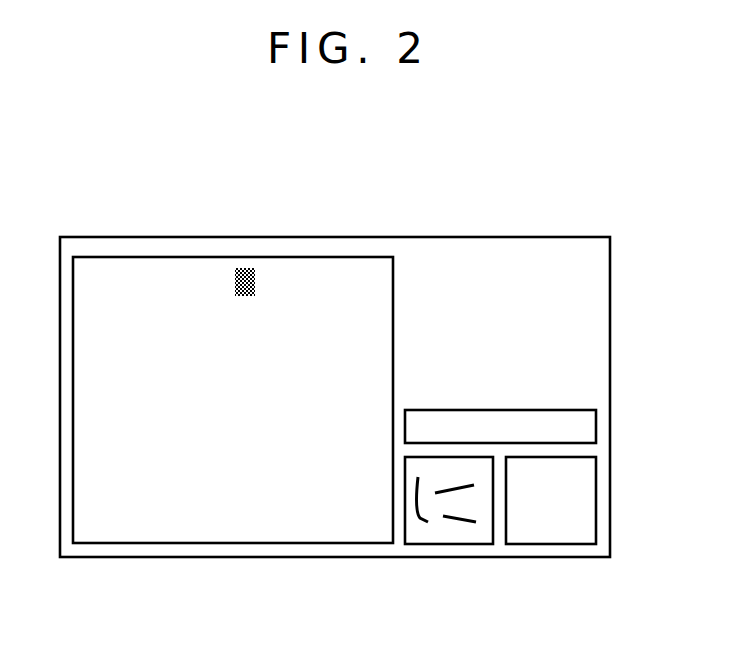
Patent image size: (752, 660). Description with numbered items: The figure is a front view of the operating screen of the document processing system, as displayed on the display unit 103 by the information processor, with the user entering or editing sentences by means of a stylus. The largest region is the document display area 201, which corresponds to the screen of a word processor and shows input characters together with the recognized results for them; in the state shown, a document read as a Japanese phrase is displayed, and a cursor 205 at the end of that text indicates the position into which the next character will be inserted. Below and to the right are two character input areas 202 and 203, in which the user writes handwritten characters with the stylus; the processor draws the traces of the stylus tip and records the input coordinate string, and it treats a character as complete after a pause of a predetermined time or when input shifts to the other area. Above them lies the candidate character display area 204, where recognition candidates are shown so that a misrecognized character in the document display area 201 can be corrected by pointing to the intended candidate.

The display unit 103 is at (553, 236).
The document display area 201 is at (95, 253).
The character input area 202 is at (458, 543).
The character input area 203 is at (560, 543).
The candidate character display area 204 is at (597, 425).
The cursor 205 is at (243, 267).